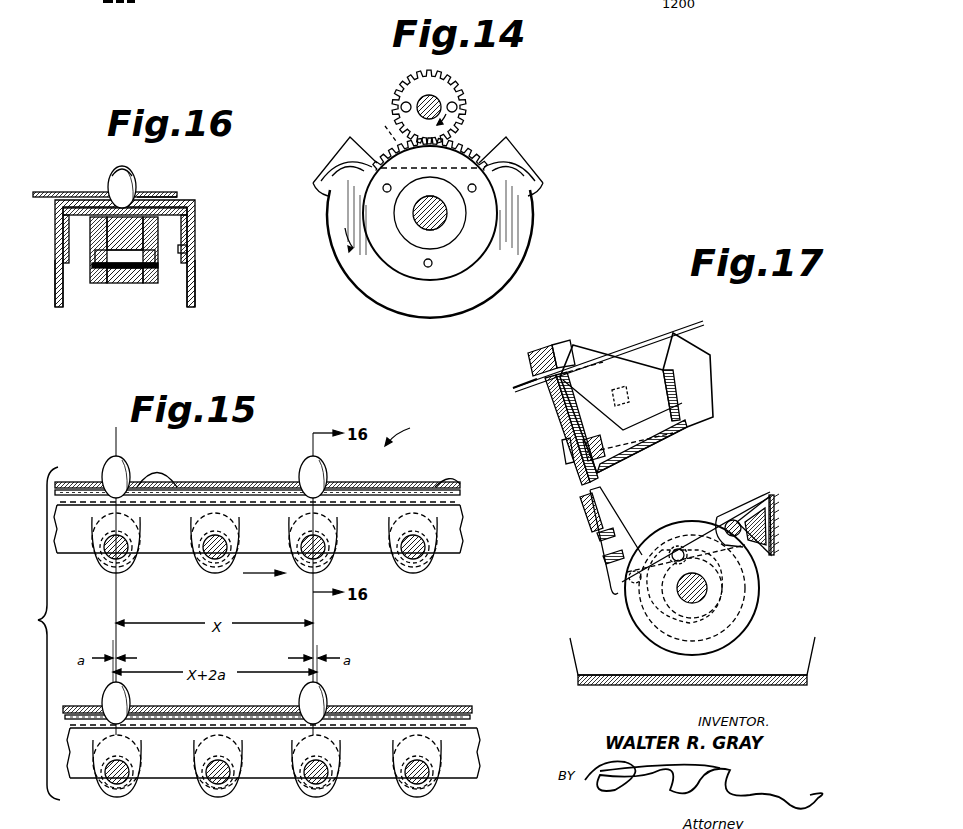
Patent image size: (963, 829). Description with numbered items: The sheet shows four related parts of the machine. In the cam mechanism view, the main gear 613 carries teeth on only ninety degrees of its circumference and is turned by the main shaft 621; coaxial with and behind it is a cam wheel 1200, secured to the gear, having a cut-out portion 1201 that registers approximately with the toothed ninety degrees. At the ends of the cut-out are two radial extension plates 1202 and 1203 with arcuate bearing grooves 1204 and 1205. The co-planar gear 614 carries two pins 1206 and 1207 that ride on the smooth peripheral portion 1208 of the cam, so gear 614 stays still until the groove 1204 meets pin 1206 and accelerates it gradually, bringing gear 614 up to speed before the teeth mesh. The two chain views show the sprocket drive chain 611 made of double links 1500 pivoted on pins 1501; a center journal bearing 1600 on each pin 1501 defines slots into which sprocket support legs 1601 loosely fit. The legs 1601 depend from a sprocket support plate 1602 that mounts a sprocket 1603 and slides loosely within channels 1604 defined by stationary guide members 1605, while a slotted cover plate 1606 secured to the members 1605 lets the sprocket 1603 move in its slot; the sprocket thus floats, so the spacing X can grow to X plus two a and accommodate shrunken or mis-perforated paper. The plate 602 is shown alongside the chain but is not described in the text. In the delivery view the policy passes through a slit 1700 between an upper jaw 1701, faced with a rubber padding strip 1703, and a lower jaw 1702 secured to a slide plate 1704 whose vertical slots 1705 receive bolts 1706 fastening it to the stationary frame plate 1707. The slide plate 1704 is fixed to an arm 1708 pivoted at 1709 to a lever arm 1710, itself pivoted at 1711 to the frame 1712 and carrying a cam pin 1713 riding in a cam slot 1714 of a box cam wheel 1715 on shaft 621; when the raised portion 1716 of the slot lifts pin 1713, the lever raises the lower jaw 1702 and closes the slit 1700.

In FIG. 14, the cam wheel 1200 is at (408, 302).
In FIG. 14, the smooth peripheral portion 1208 is at (510, 279).
In FIG. 14, the gear 613 is at (464, 147).
In FIG. 14, the gear 614 is at (453, 85).
In FIG. 14, the pin 1206 is at (401, 103).
In FIG. 14, the pin 1207 is at (458, 107).
In FIG. 14, the cut-out portion 1201 is at (368, 130).
In FIG. 14, the radial extension plate 1202 is at (331, 157).
In FIG. 14, the radial extension plate 1203 is at (520, 155).
In FIG. 14, the arcuate bearing groove 1204 is at (323, 177).
In FIG. 14, the arcuate bearing groove 1205 is at (534, 192).
In FIG. 16, the top plate 602 is at (177, 193).
In FIG. 15, the top plate 602 is at (388, 481).
In FIG. 17, the top plate 602 is at (523, 392).
In FIG. 16, the center journal bearing 1600 is at (120, 174).
In FIG. 16, the sprocket support leg 1601 is at (108, 283).
In FIG. 15, the sprocket support leg 1601 is at (165, 459).
In FIG. 16, the sprocket support plate 1602 is at (153, 192).
In FIG. 15, the sprocket support plate 1602 is at (220, 483).
In FIG. 16, the sprocket 1603 is at (117, 170).
In FIG. 15, the sprocket 1603 is at (108, 472).
In FIG. 16, the channel 1604 is at (77, 190).
In FIG. 16, the guide member 1605 is at (182, 248).
In FIG. 16, the slotted cover plate 1606 is at (195, 297).
In FIG. 16, the double link 1500 is at (103, 277).
In FIG. 15, the double link 1500 is at (262, 520).
In FIG. 16, the pin 1501 is at (135, 283).
In FIG. 15, the pin 1501 is at (130, 562).
In FIG. 15, the sprocket drive chain 611 is at (408, 430).
In FIG. 17, the slit 1700 is at (530, 380).
In FIG. 17, the upper jaw 1701 is at (540, 357).
In FIG. 17, the lower jaw 1702 is at (552, 372).
In FIG. 17, the rubber padding strip 1703 is at (555, 372).
In FIG. 17, the slide plate 1704 is at (566, 435).
In FIG. 17, the vertical slot 1705 is at (598, 480).
In FIG. 17, the bolt 1706 is at (578, 473).
In FIG. 17, the frame plate 1707 is at (567, 383).
In FIG. 17, the arm 1708 is at (618, 530).
In FIG. 17, the pivot 1709 is at (630, 587).
In FIG. 17, the lever arm 1710 is at (727, 510).
In FIG. 17, the pivot 1711 is at (775, 503).
In FIG. 17, the frame 1712 is at (772, 532).
In FIG. 17, the cam pin 1713 is at (683, 550).
In FIG. 17, the cam slot 1714 is at (743, 565).
In FIG. 17, the box cam wheel 1715 is at (750, 597).
In FIG. 17, the raised portion 1716 is at (673, 652).
In FIG. 17, the main shaft 621 is at (700, 600).